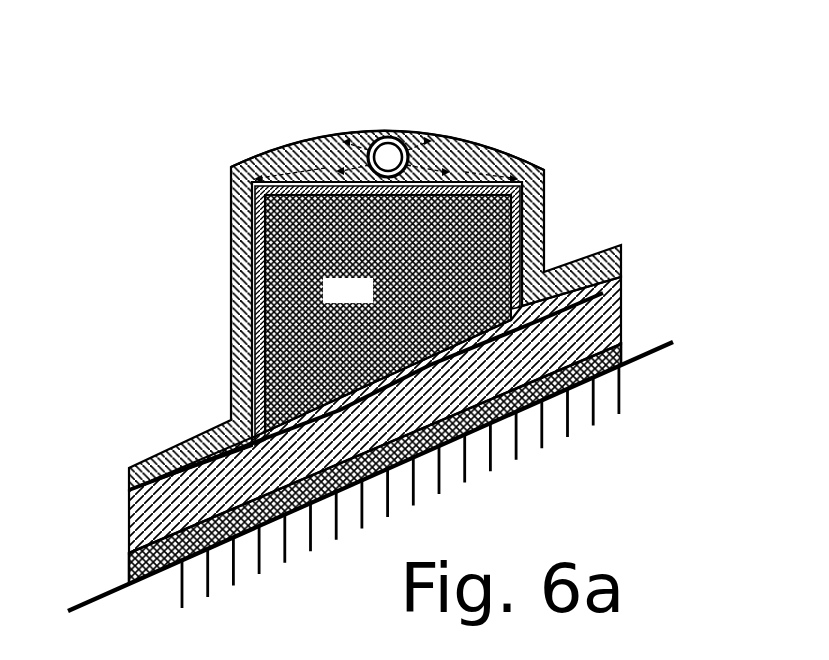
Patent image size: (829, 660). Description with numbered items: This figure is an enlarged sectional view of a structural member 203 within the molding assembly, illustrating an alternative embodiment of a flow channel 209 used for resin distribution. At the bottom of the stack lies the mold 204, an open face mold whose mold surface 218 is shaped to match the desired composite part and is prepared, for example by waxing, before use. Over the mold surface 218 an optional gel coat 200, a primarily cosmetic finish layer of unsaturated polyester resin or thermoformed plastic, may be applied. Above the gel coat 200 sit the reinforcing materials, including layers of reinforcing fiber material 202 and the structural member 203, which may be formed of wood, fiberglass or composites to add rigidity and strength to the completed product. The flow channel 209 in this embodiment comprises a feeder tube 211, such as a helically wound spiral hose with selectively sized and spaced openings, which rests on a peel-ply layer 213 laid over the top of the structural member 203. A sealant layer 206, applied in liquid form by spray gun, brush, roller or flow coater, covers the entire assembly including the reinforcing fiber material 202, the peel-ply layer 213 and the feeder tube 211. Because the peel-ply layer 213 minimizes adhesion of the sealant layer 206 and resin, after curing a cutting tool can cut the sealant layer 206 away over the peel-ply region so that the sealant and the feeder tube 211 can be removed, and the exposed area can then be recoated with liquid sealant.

The gel coat 200 is at (622, 352).
The reinforcing fiber material 202 is at (231, 362).
The structural member 203 is at (388, 313).
The mold 204 is at (645, 353).
The sealant layer 206 is at (231, 216).
The flow channel 209 is at (296, 156).
The feeder tube 211 is at (382, 134).
The peel-ply layer 213 is at (470, 145).
The mold surface 218 is at (88, 602).